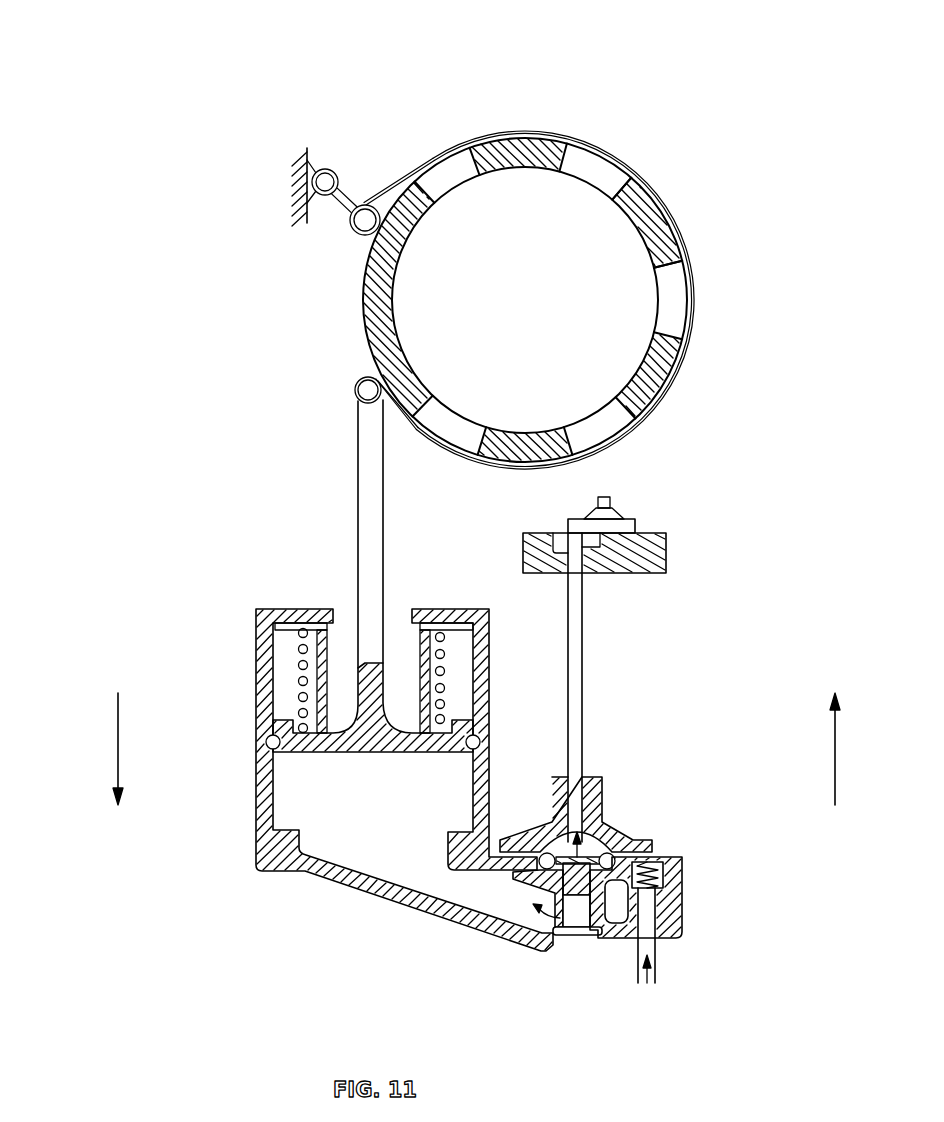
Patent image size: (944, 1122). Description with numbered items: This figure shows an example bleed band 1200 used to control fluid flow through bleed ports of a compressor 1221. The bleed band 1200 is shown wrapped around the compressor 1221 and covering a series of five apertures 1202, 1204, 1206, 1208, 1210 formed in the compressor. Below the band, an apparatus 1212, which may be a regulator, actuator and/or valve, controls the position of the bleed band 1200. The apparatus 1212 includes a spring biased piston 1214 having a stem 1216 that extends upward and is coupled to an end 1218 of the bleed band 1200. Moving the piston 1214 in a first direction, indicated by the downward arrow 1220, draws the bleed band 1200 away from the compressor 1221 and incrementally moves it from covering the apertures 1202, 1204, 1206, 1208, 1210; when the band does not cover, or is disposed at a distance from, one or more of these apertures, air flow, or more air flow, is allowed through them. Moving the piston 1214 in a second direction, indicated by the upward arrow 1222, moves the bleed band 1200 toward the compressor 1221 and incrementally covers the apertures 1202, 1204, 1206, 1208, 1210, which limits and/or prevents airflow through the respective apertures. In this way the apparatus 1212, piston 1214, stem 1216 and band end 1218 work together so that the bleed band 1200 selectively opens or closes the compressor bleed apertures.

The bleed band 1200 is at (232, 36).
The aperture 1202 is at (455, 178).
The aperture 1204 is at (588, 170).
The aperture 1206 is at (683, 296).
The aperture 1208 is at (613, 428).
The aperture 1210 is at (450, 430).
The compressor 1221 is at (645, 233).
The apparatus 1212 is at (273, 569).
The spring biased piston 1214 is at (290, 745).
The stem 1216 is at (367, 483).
The end of the bleed band 1218 is at (362, 379).
The arrow 1220 is at (118, 715).
The arrow 1222 is at (835, 735).